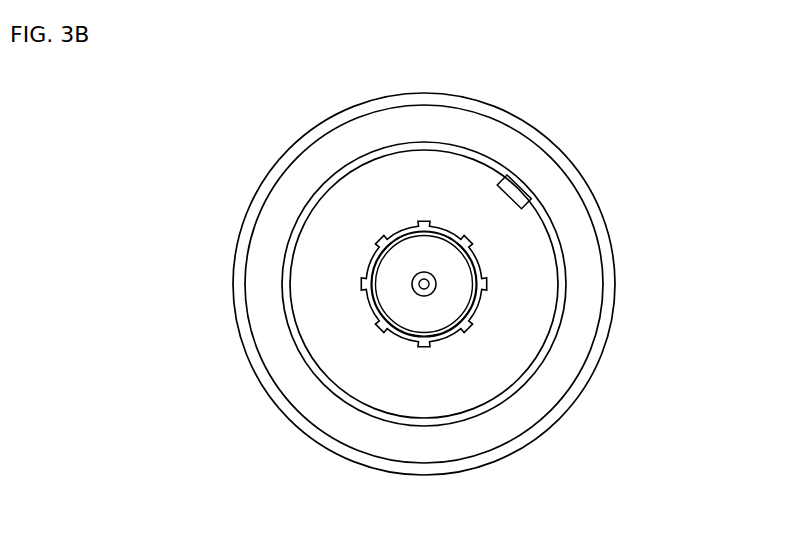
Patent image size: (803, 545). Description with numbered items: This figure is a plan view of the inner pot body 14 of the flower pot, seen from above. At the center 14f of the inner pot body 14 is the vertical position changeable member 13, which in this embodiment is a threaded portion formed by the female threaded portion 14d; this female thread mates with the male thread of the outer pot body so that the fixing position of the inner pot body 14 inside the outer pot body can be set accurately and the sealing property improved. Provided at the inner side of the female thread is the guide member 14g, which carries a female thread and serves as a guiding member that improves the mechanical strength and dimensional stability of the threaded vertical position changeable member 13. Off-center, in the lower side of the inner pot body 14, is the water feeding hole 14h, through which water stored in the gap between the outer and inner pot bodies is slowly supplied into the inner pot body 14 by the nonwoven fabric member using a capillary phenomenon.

The inner pot body 14 is at (668, 51).
The water feeding hole 14h is at (514, 186).
The vertical position changeable member 13 is at (548, 296).
The female threaded portion 14d is at (458, 300).
The guide member 14g is at (473, 330).
The center 14f is at (433, 278).